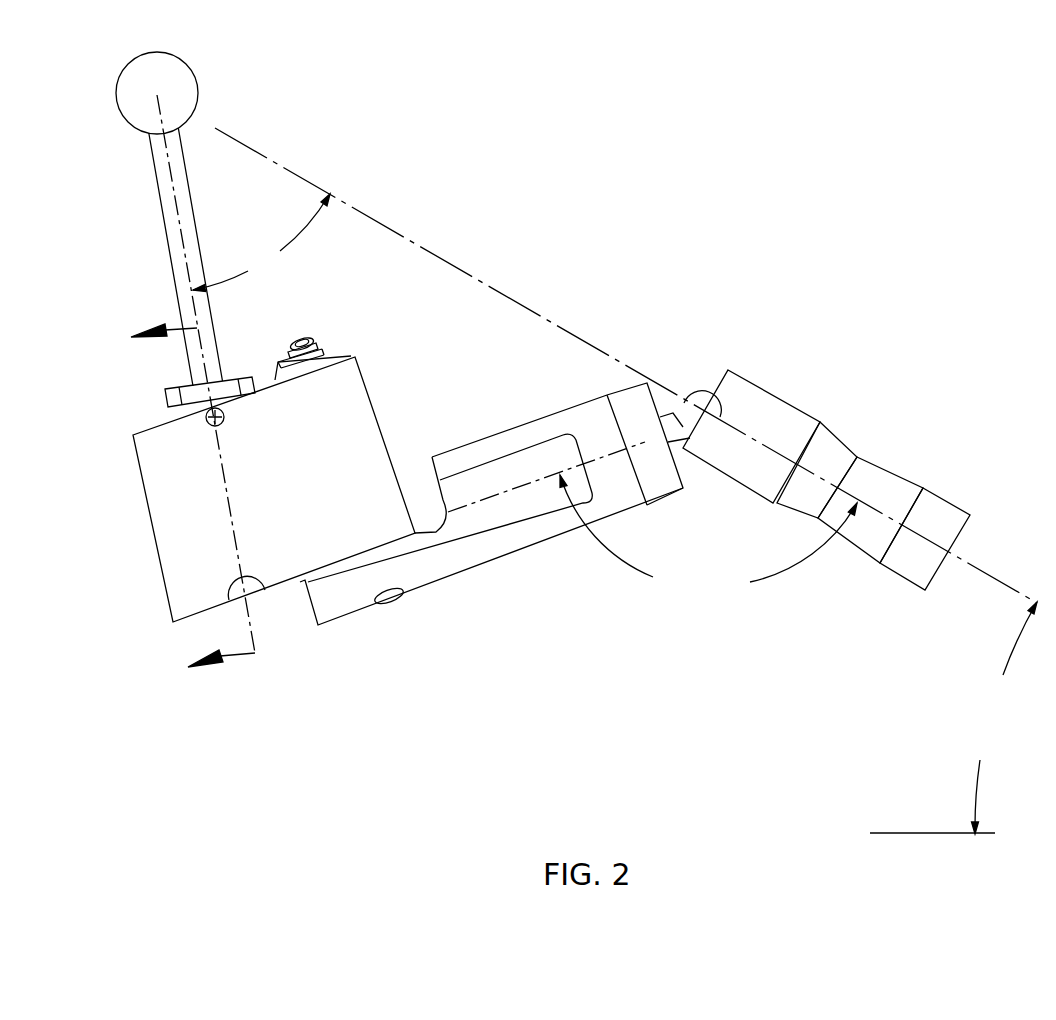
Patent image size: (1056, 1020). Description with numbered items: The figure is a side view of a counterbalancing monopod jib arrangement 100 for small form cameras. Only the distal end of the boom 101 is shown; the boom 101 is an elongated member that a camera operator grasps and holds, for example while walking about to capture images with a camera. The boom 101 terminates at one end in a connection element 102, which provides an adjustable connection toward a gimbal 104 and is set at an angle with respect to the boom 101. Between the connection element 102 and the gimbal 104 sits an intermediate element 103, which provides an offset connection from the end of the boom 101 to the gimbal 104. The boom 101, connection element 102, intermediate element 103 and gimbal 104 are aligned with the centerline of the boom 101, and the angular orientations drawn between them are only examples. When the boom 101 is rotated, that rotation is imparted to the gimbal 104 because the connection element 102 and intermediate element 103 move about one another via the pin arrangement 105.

The counterbalancing monopod jib arrangement 100 is at (714, 240).
The boom 101 is at (902, 463).
The connection element 102 is at (552, 418).
The intermediate element 103 is at (360, 381).
The gimbal joint 104 is at (210, 67).
The pin arrangement 105 is at (312, 313).